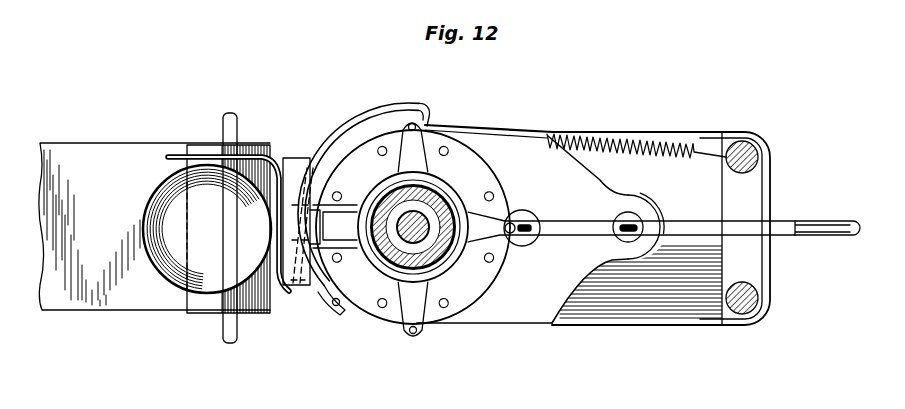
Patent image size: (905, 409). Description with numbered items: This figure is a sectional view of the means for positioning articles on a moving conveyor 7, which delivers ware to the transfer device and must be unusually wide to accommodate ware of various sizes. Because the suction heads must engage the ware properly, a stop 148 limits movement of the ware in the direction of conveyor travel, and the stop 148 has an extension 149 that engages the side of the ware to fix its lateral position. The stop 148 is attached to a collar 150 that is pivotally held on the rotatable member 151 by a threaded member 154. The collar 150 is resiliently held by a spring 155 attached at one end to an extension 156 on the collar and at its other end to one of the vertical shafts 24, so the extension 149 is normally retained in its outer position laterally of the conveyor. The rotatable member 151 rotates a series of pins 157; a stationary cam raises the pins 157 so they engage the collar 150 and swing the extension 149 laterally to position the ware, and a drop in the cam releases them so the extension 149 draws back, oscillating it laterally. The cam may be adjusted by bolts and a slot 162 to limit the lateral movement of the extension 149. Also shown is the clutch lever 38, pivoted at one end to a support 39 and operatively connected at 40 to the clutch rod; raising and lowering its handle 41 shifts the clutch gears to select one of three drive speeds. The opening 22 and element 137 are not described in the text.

The conveyor 7 is at (154, 226).
The dial opening 22 is at (207, 229).
The extension 149 is at (172, 157).
The collar 150 is at (370, 178).
The rotatable member 151 is at (478, 288).
The threaded member 154 is at (447, 190).
The spring 155 is at (655, 118).
The extension 156 is at (418, 125).
The pins 157 is at (447, 306).
The slot 162 is at (335, 308).
The stop 148 is at (296, 290).
The clutch lever 38 is at (559, 240).
The support 39 is at (530, 222).
The connection to clutch rod 40 is at (630, 220).
The slot pin 137 is at (640, 228).
The handle 41 is at (823, 221).
The vertical shaft 24 is at (758, 157).